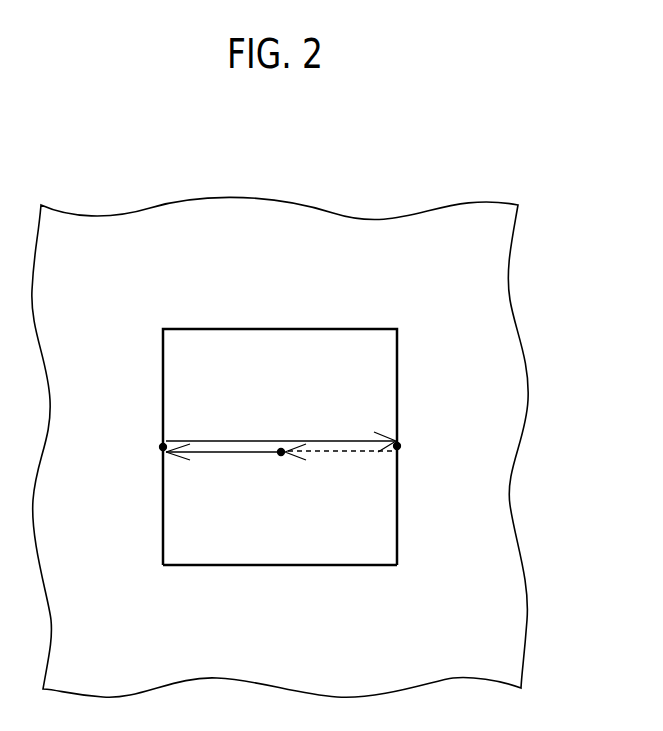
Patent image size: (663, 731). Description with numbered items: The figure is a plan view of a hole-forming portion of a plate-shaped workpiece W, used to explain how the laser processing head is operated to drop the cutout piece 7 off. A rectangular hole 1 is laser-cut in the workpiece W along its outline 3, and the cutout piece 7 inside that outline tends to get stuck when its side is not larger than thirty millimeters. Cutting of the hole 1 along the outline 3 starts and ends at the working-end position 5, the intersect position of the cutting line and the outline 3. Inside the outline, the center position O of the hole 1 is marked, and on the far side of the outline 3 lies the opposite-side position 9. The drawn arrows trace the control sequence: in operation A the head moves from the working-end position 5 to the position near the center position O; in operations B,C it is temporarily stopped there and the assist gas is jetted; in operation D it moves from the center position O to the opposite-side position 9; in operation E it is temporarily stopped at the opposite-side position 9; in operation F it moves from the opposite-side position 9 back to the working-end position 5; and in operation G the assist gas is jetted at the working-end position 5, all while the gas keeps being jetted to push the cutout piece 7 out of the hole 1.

The plate-shaped workpiece W is at (505, 313).
The hole 1 is at (295, 347).
The outline 3 is at (208, 329).
The cutout piece 7 is at (293, 545).
The opposite-side position 9 is at (160, 447).
The center position O is at (281, 449).
The working-end position 5 is at (405, 445).
The operation A is at (363, 455).
The operations B and C B,C is at (281, 456).
The operation D is at (218, 455).
The operation E is at (160, 450).
The operation F is at (222, 440).
The operation G is at (400, 443).